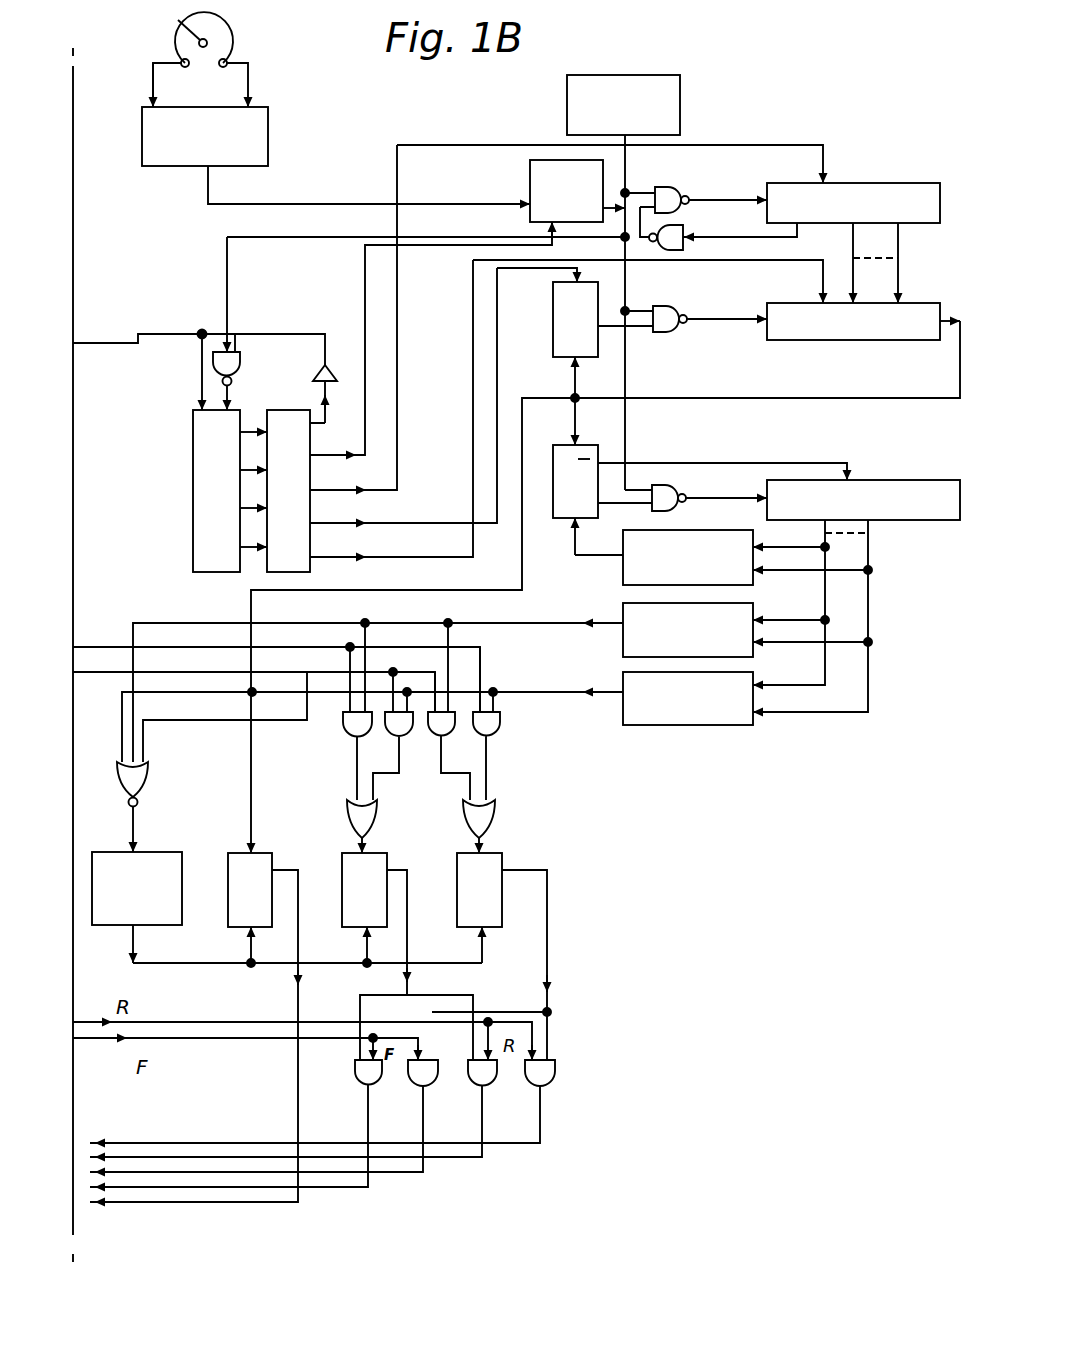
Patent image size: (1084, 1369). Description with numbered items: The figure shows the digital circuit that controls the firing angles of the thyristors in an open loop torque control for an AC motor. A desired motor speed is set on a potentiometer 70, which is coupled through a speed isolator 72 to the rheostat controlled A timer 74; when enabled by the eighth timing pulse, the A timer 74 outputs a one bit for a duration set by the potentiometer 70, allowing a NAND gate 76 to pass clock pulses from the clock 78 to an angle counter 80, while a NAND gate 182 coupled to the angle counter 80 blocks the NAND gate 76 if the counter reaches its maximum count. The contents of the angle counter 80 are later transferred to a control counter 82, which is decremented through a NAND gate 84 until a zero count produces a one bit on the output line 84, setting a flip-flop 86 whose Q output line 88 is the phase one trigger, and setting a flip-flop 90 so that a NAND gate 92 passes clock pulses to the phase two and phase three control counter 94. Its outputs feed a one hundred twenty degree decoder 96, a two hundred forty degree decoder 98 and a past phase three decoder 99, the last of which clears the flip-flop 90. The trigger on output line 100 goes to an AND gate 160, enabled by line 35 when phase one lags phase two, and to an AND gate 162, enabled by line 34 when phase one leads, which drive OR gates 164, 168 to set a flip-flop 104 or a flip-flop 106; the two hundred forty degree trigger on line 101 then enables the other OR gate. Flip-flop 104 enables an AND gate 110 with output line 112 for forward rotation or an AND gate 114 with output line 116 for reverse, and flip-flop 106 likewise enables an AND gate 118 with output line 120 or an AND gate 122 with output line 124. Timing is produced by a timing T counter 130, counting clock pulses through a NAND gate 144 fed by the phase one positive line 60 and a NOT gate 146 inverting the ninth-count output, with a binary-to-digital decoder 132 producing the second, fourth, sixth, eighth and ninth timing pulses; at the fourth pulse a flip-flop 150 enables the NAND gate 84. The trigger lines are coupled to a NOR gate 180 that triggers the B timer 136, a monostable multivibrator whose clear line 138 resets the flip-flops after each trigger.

The output line 34 is at (298, 674).
The output line 35 is at (98, 640).
The phase one positive line 60 is at (106, 344).
The potentiometer 70 is at (178, 42).
The speed isolator 72 is at (155, 166).
The A timer 74 is at (530, 172).
The NAND gate 76 is at (672, 187).
The clock 78 is at (680, 85).
The angle counter 80 is at (900, 172).
The control counter 82 is at (835, 340).
The NAND gate and output line 84 is at (662, 332).
The flip-flop 86 is at (228, 860).
The Q output line 88 is at (298, 1082).
The flip-flop 90 is at (553, 500).
The NAND gate 92 is at (678, 510).
The phase two and phase three control counter 94 is at (910, 480).
The 120 degree decoder 96 is at (623, 640).
The 240 degree decoder 98 is at (623, 725).
The past phase three decoder 99 is at (623, 565).
The output line 100 is at (500, 623).
The trigger producing line 101 is at (530, 692).
The flip-flop 104 is at (342, 860).
The flip-flop 106 is at (491, 945).
The AND gate 110 is at (357, 1078).
The output line 112 is at (340, 1187).
The AND gate 114 is at (470, 1078).
The output line 116 is at (470, 1172).
The AND gate 118 is at (412, 1078).
The output line 120 is at (408, 1172).
The AND gate 122 is at (555, 1077).
The output line 124 is at (540, 1124).
The timing T counter 130 is at (193, 466).
The binary-to-digital decoder 132 is at (291, 410).
The B timer 136 is at (158, 850).
The clear line 138 is at (196, 963).
The NAND gate 144 is at (240, 357).
The NOT gate 146 is at (338, 366).
The flip-flop 150 is at (553, 330).
The AND gate 160 is at (343, 728).
The AND gate 162 is at (434, 735).
The OR gate 164 is at (352, 815).
The OR gate 168 is at (493, 822).
The NOR gate 180 is at (148, 776).
The NAND gate 182 is at (680, 230).